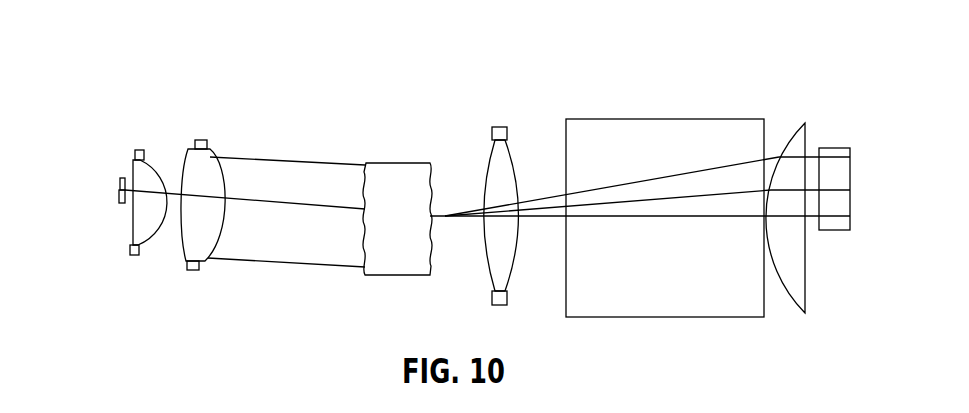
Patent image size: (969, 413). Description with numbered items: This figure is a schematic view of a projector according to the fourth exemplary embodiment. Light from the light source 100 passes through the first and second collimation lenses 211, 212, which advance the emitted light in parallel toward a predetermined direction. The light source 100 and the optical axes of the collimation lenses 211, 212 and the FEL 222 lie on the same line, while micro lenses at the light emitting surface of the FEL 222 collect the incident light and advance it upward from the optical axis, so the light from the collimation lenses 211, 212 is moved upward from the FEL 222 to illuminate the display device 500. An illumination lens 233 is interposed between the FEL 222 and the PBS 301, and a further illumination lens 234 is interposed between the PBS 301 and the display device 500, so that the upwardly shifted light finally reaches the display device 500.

The light source 100 is at (120, 178).
The first collimation lens 211 is at (150, 176).
The second collimation lens 212 is at (207, 168).
The FEL (fly eye lens) 222 is at (395, 170).
The illumination lens 233 is at (510, 162).
The PBS 301 is at (666, 135).
The illumination lens 234 is at (803, 125).
The display device 500 is at (839, 155).